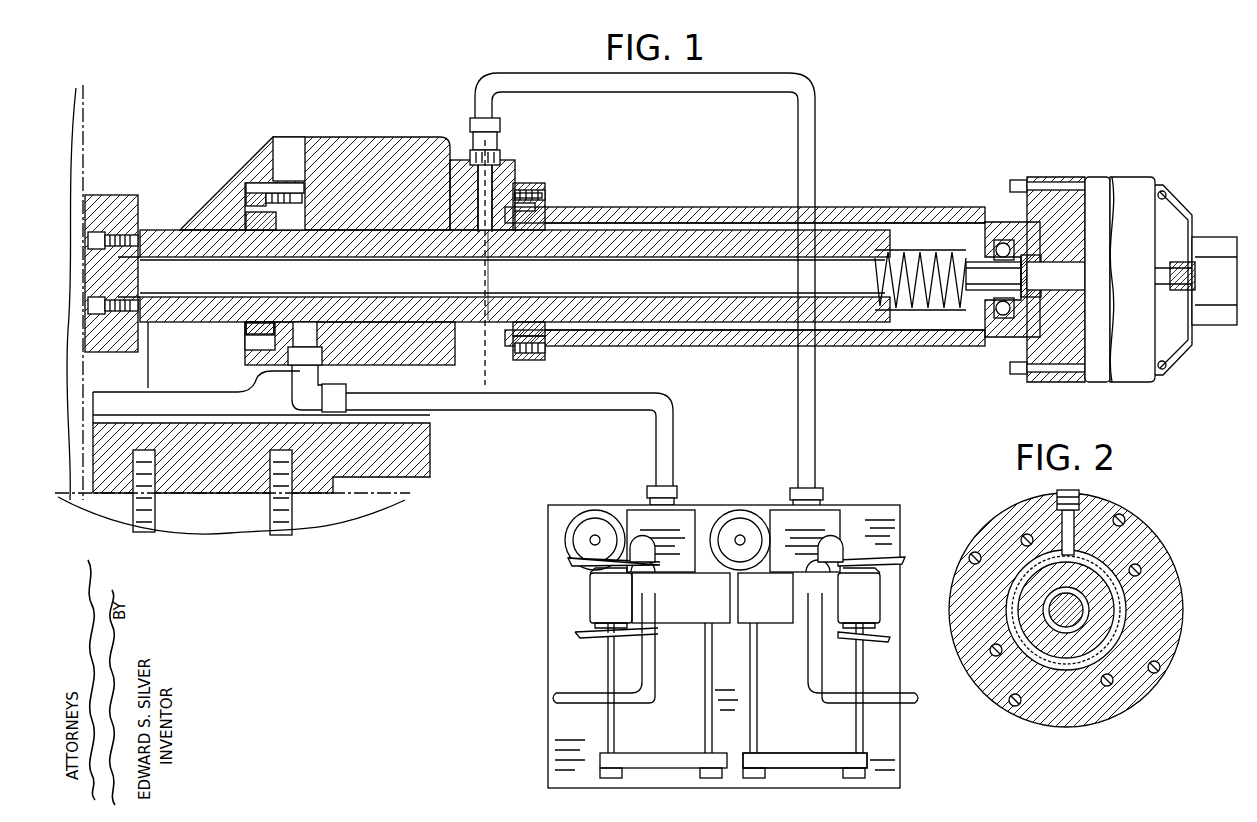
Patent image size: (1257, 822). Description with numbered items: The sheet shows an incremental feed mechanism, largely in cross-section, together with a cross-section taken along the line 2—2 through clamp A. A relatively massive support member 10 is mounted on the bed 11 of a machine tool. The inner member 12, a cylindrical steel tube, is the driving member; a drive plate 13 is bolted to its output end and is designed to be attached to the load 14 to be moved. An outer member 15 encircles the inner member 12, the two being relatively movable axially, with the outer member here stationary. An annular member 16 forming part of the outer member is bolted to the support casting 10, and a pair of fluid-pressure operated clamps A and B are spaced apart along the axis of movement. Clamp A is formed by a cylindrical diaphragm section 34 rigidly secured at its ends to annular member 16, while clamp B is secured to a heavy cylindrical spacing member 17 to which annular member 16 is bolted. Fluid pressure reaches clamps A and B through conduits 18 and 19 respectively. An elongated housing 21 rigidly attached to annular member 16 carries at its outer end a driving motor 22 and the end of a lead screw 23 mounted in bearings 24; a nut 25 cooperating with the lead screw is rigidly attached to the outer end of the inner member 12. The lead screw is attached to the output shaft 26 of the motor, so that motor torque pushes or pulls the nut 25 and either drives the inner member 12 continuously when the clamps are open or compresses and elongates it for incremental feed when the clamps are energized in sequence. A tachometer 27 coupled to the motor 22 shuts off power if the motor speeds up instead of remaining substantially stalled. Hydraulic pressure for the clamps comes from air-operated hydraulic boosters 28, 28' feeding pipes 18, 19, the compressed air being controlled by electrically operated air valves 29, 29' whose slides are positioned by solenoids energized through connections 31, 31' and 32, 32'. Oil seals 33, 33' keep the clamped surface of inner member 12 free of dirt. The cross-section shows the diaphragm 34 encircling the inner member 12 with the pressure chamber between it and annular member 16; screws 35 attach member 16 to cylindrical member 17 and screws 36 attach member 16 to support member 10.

In FIG. 1, the support member 10 is at (363, 130).
In FIG. 1, the bed 11 is at (312, 518).
In FIG. 1, the inner member 12 is at (168, 229).
In FIG. 2, the inner member 12 is at (1108, 606).
In FIG. 1, the drive plate 13 is at (118, 195).
In FIG. 1, the load 14 is at (87, 146).
In FIG. 1, the outer member 15 is at (547, 180).
In FIG. 1, the annular member 16 is at (492, 145).
In FIG. 2, the annular member 16 is at (1160, 572).
In FIG. 1, the cylindrical spacing member 17 is at (400, 195).
In FIG. 1, the conduit 18 is at (657, 85).
In FIG. 1, the conduit 19 is at (578, 412).
In FIG. 1, the elongated housing 21 is at (710, 207).
In FIG. 1, the driving motor 22 is at (1148, 246).
In FIG. 1, the lead screw 23 is at (973, 262).
In FIG. 2, the lead screw 23 is at (1080, 614).
In FIG. 1, the bearings 24 is at (1003, 222).
In FIG. 1, the nut 25 is at (925, 245).
In FIG. 1, the output shaft 26 is at (1077, 275).
In FIG. 1, the tachometer 27 is at (1228, 287).
In FIG. 1, the hydraulic booster 28 is at (733, 646).
In FIG. 1, the hydraulic booster 28' is at (805, 734).
In FIG. 1, the air valve 29 is at (593, 598).
In FIG. 1, the air valve 29' is at (884, 598).
In FIG. 1, the connection 31 is at (584, 562).
In FIG. 1, the connection 31' is at (605, 647).
In FIG. 1, the connection 32 is at (873, 553).
In FIG. 1, the connection 32' is at (884, 637).
In FIG. 1, the oil seal 33 is at (244, 334).
In FIG. 1, the oil seal 33' is at (547, 345).
In FIG. 1, the cylindrical diaphragm section 34 is at (491, 257).
In FIG. 2, the cylindrical diaphragm section 34 is at (1098, 570).
In FIG. 1, the screws 35 is at (546, 356).
In FIG. 2, the screws 35 is at (992, 656).
In FIG. 2, the screws 36 is at (1160, 670).
In FIG. 1, the clamp A is at (543, 196).
In FIG. 1, the clamp B is at (260, 212).
In FIG. 1, the section line 2 is at (499, 155).